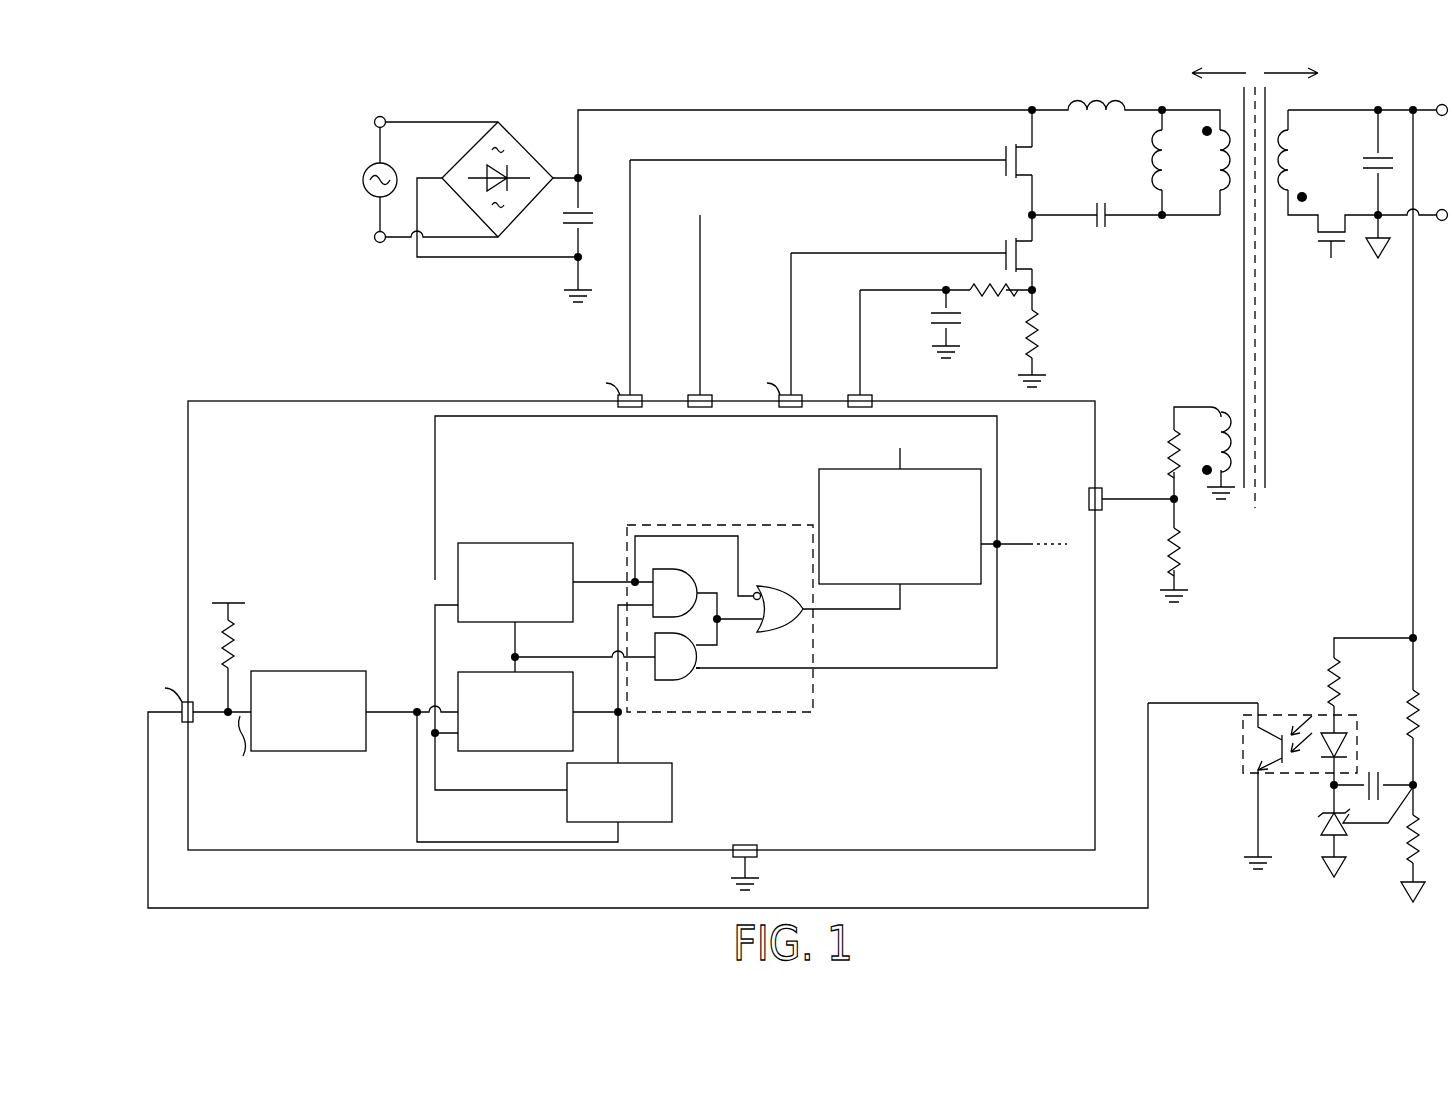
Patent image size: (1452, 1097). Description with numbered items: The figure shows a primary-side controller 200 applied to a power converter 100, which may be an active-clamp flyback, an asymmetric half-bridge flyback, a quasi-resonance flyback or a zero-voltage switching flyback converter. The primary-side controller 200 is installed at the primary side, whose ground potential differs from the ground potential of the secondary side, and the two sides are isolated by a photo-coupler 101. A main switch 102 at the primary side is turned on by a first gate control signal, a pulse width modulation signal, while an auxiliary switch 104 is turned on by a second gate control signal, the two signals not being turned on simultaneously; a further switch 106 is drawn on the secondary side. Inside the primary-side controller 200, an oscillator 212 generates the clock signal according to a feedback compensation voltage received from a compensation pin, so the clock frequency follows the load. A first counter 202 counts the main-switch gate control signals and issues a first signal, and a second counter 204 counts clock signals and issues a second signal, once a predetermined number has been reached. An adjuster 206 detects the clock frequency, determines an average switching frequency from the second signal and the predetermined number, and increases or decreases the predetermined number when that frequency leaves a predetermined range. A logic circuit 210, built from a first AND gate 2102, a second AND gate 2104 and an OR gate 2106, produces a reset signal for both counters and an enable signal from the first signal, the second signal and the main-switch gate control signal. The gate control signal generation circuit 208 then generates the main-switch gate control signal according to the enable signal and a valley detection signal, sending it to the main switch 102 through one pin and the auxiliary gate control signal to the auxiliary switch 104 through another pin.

The power converter 100 is at (236, 98).
The photo-coupler 101 is at (1283, 713).
The main switch 102 is at (1025, 259).
The auxiliary switch 104 is at (1025, 167).
The synchronous rectifier switch 106 is at (1342, 222).
The primary-side controller 200 is at (381, 399).
The first counter 202 is at (502, 542).
The second counter 204 is at (502, 672).
The adjuster 206 is at (647, 762).
The gate control signal generation circuit 208 is at (933, 585).
The logic circuit 210 is at (788, 714).
The first AND gate 2102 is at (705, 567).
The second AND gate 2104 is at (688, 680).
The OR gate 2106 is at (782, 586).
The oscillator 212 is at (310, 671).